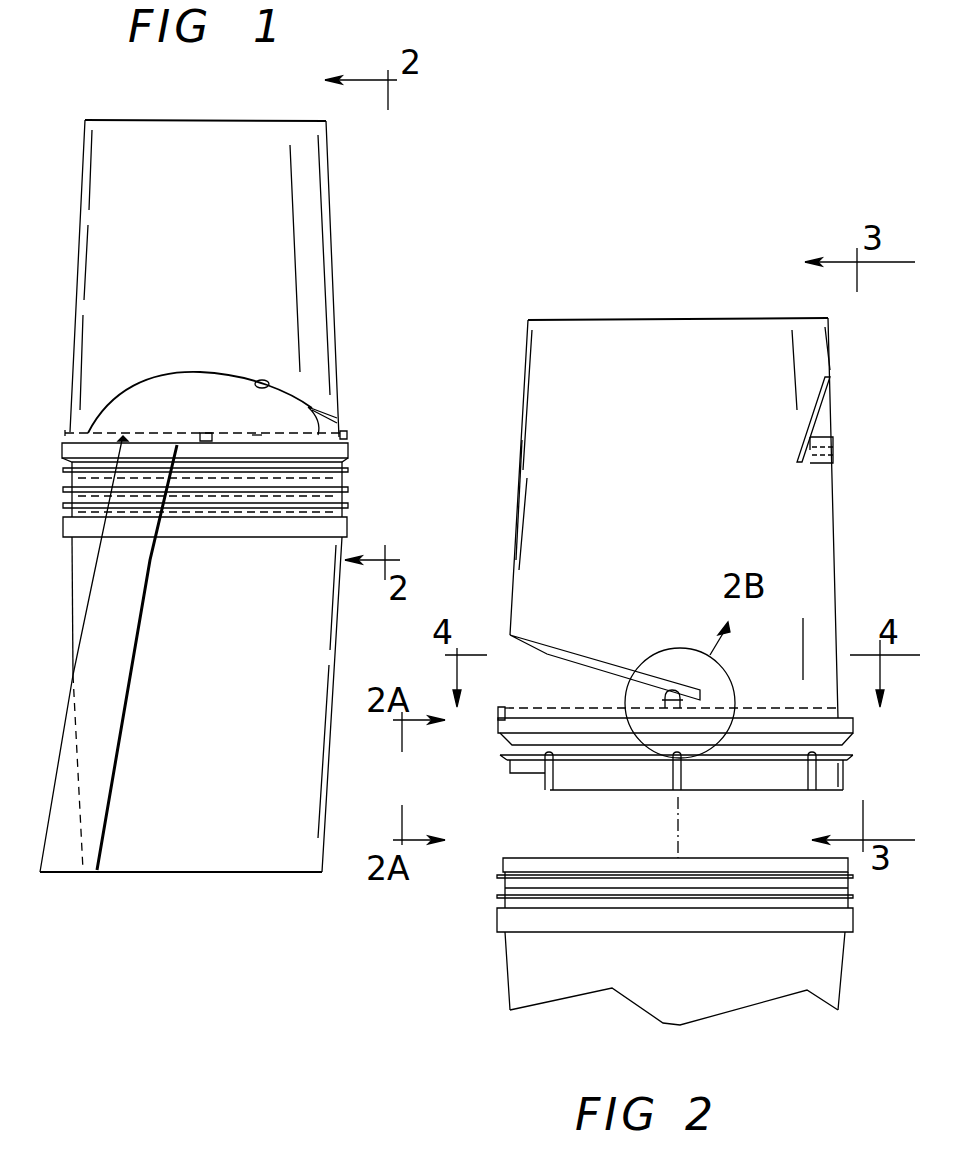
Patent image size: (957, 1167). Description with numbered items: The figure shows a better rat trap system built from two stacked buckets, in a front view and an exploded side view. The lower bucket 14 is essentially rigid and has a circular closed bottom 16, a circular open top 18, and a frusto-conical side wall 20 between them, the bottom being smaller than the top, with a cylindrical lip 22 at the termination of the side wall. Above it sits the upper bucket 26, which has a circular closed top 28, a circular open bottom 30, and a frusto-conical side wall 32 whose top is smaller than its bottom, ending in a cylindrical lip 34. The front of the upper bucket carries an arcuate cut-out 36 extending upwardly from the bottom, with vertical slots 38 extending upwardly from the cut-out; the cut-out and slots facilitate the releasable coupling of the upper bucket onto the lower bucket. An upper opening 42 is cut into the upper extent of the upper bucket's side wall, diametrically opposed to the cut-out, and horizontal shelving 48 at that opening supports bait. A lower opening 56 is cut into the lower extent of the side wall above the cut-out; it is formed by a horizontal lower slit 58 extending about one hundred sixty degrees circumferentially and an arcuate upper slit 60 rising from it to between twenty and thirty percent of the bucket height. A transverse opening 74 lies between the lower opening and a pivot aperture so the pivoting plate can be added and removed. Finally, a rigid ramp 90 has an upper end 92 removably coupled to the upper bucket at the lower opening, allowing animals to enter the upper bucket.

In FIG. 1, the lower bucket 14 is at (212, 684).
In FIG. 2, the lower bucket 14 is at (694, 979).
In FIG. 1, the closed bottom 16 is at (198, 873).
In FIG. 2, the open top 18 is at (528, 860).
In FIG. 2, the frusto-conical side wall 20 is at (843, 958).
In FIG. 2, the cylindrical lip 22 is at (853, 873).
In FIG. 1, the upper bucket 26 is at (217, 226).
In FIG. 2, the upper bucket 26 is at (699, 422).
In FIG. 2, the closed top 28 is at (652, 320).
In FIG. 2, the open bottom 30 is at (843, 791).
In FIG. 2, the frusto-conical side wall 32 is at (522, 458).
In FIG. 2, the cylindrical lip 34 is at (850, 746).
In FIG. 2, the arcuate cut-out 36 is at (523, 774).
In FIG. 2, the vertical slots 38 is at (568, 790).
In FIG. 2, the upper opening 42 is at (812, 405).
In FIG. 2, the horizontal shelving 48 is at (818, 473).
In FIG. 1, the lower opening 56 is at (219, 407).
In FIG. 1, the horizontal lower slit 58 is at (257, 435).
In FIG. 2, the horizontal lower slit 58 is at (523, 710).
In FIG. 1, the arcuate upper slit 60 is at (268, 383).
In FIG. 1, the transverse opening 74 is at (332, 408).
In FIG. 2, the transverse opening 74 is at (583, 708).
In FIG. 1, the ramp 90 is at (117, 590).
In FIG. 1, the upper end 92 is at (143, 447).